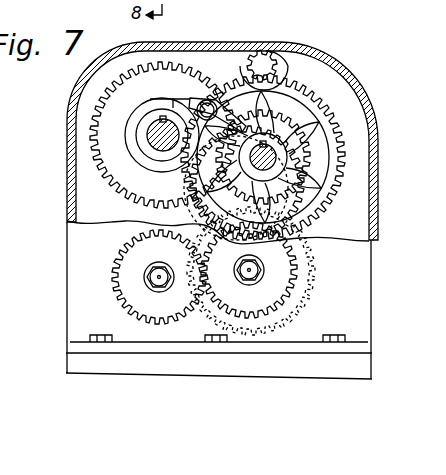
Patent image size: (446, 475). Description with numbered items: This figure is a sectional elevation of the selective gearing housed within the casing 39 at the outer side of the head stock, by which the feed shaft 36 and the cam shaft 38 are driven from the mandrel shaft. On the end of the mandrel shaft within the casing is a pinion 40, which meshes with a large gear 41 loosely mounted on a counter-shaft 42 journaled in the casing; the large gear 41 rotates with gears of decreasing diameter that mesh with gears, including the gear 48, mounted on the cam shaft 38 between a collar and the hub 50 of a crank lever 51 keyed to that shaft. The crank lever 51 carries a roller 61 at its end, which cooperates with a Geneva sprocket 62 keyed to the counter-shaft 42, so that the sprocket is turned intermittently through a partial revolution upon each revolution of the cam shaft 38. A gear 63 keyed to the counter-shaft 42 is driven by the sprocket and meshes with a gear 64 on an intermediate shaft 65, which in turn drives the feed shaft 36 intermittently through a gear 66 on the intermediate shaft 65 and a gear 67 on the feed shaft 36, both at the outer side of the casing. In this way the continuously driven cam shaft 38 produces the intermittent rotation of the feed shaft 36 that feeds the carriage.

The feed shaft 36 is at (157, 291).
The cam shaft 38 is at (147, 144).
The casing 39 is at (378, 205).
The pinion 40 is at (282, 62).
The large gear 41 is at (334, 130).
The counter-shaft 42 is at (272, 161).
The gear 48 is at (163, 135).
The hub 50 is at (136, 119).
The crank lever 51 is at (196, 105).
The roller 61 is at (214, 92).
The Geneva sprocket 62 is at (303, 117).
The gear 63 is at (336, 148).
The gear 64 is at (301, 238).
The intermediate shaft 65 is at (266, 270).
The gear 66 is at (273, 293).
The gear 67 is at (132, 288).